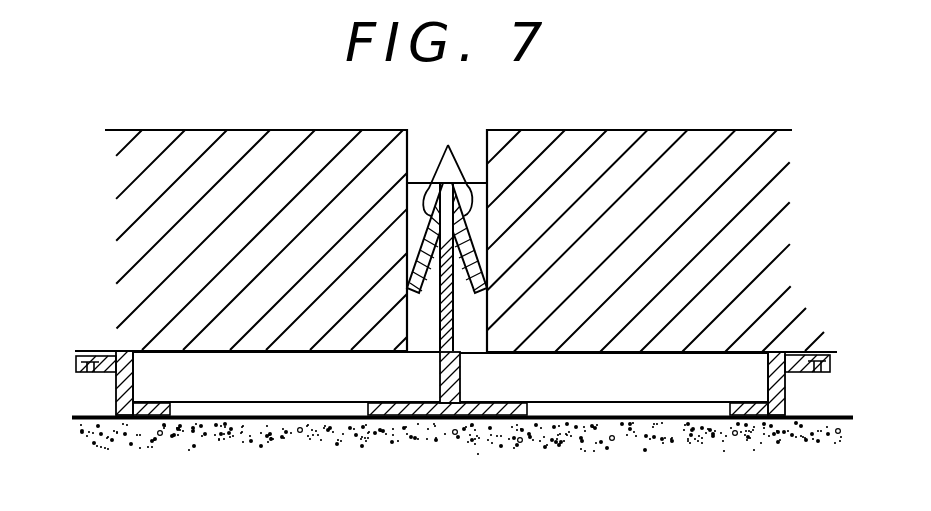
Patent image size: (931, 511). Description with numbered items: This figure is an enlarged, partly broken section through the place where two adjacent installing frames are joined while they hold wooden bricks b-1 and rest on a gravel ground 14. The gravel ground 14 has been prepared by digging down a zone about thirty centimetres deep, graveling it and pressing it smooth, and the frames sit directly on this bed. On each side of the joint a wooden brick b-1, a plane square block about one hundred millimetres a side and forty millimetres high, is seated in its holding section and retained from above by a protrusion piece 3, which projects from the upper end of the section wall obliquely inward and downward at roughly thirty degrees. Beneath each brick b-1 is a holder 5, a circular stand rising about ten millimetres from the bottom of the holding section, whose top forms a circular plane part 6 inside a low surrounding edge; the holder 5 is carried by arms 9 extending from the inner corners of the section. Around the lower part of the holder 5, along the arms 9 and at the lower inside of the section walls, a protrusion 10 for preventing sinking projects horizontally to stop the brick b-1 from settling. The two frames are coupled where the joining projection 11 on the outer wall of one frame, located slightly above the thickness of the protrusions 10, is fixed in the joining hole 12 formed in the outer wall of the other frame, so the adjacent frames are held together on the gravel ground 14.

The wooden brick b-1 is at (205, 142).
The protrusion piece 3 is at (447, 232).
The holder 5 is at (140, 382).
The circular plane part 6 is at (100, 352).
The arm 9 is at (621, 378).
The protrusion for preventing sinking 10 is at (157, 418).
The joining projection 11 is at (440, 375).
The joining hole 12 is at (463, 402).
The gravel ground 14 is at (72, 417).